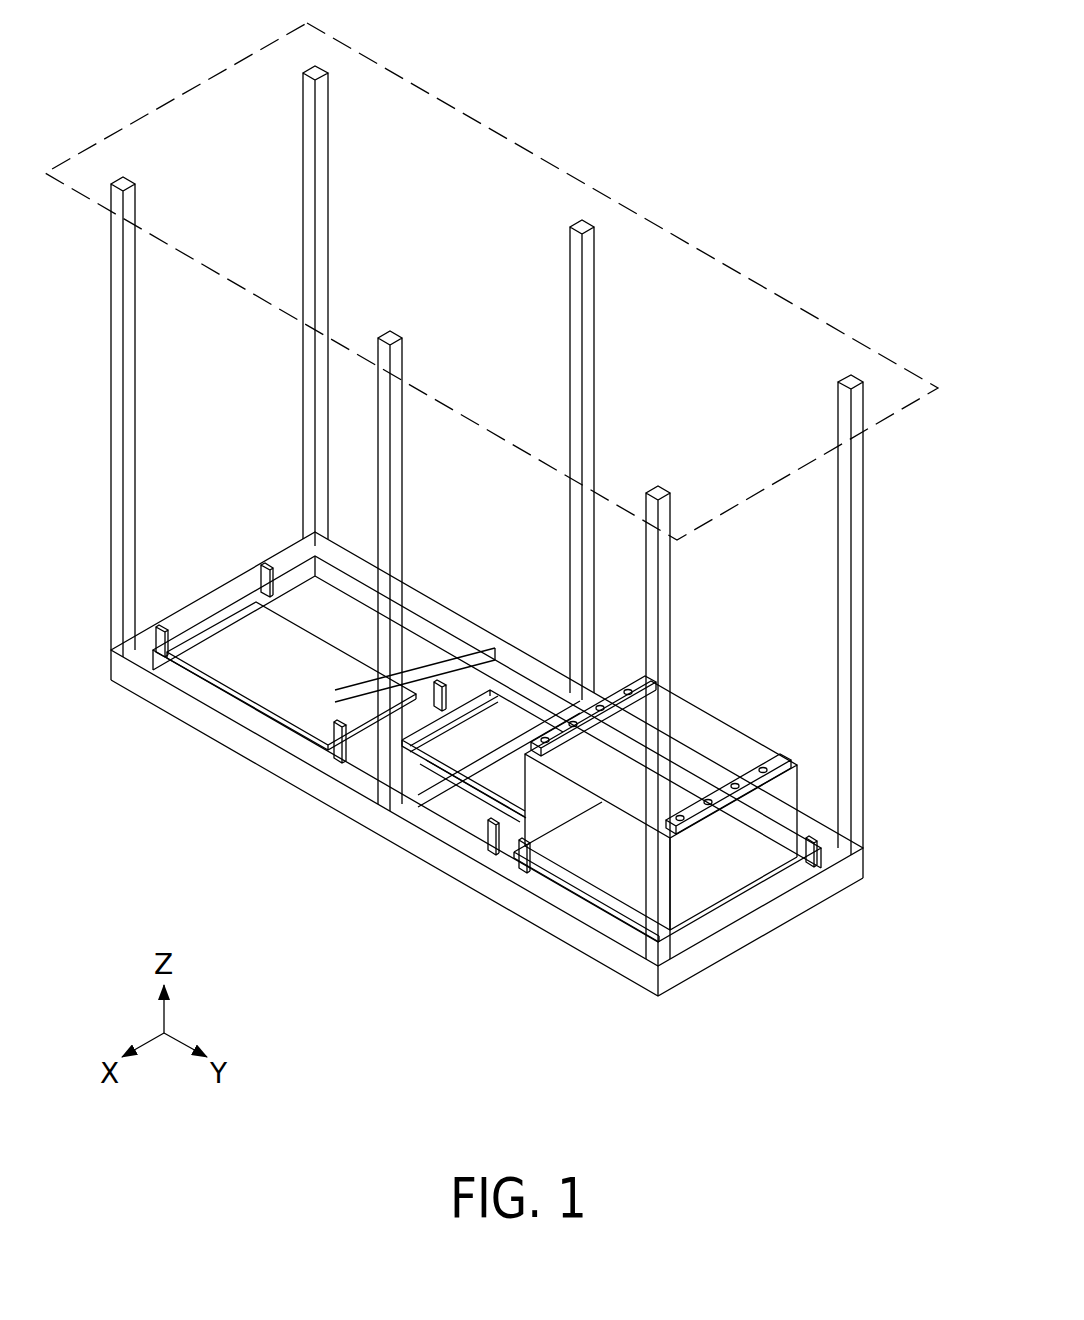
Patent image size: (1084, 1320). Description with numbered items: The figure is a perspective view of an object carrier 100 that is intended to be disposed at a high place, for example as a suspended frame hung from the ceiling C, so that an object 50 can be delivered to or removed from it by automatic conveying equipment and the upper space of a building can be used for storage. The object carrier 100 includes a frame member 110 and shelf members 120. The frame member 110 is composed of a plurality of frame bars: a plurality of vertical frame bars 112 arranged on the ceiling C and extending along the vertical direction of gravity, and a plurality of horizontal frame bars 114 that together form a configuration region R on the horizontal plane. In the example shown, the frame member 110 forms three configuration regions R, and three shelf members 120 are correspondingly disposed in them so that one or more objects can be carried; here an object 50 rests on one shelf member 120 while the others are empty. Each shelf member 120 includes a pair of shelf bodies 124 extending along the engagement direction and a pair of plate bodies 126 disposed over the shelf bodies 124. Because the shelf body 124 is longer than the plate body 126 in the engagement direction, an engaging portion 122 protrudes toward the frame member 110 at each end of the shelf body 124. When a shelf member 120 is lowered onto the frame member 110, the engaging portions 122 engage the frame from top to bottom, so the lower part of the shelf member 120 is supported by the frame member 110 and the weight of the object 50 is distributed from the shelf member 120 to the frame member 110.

The object carrier 100 is at (936, 1062).
The frame member 110 is at (525, 531).
The vertical frame bars 112 is at (322, 187).
The horizontal frame bars 114 is at (347, 552).
The shelf member 120 is at (270, 664).
The engaging portion 122 is at (467, 690).
The shelf bodies 124 is at (447, 808).
The plate bodies 126 is at (487, 782).
The object 50 is at (725, 868).
The ceiling C is at (620, 206).
The configuration region R is at (429, 652).